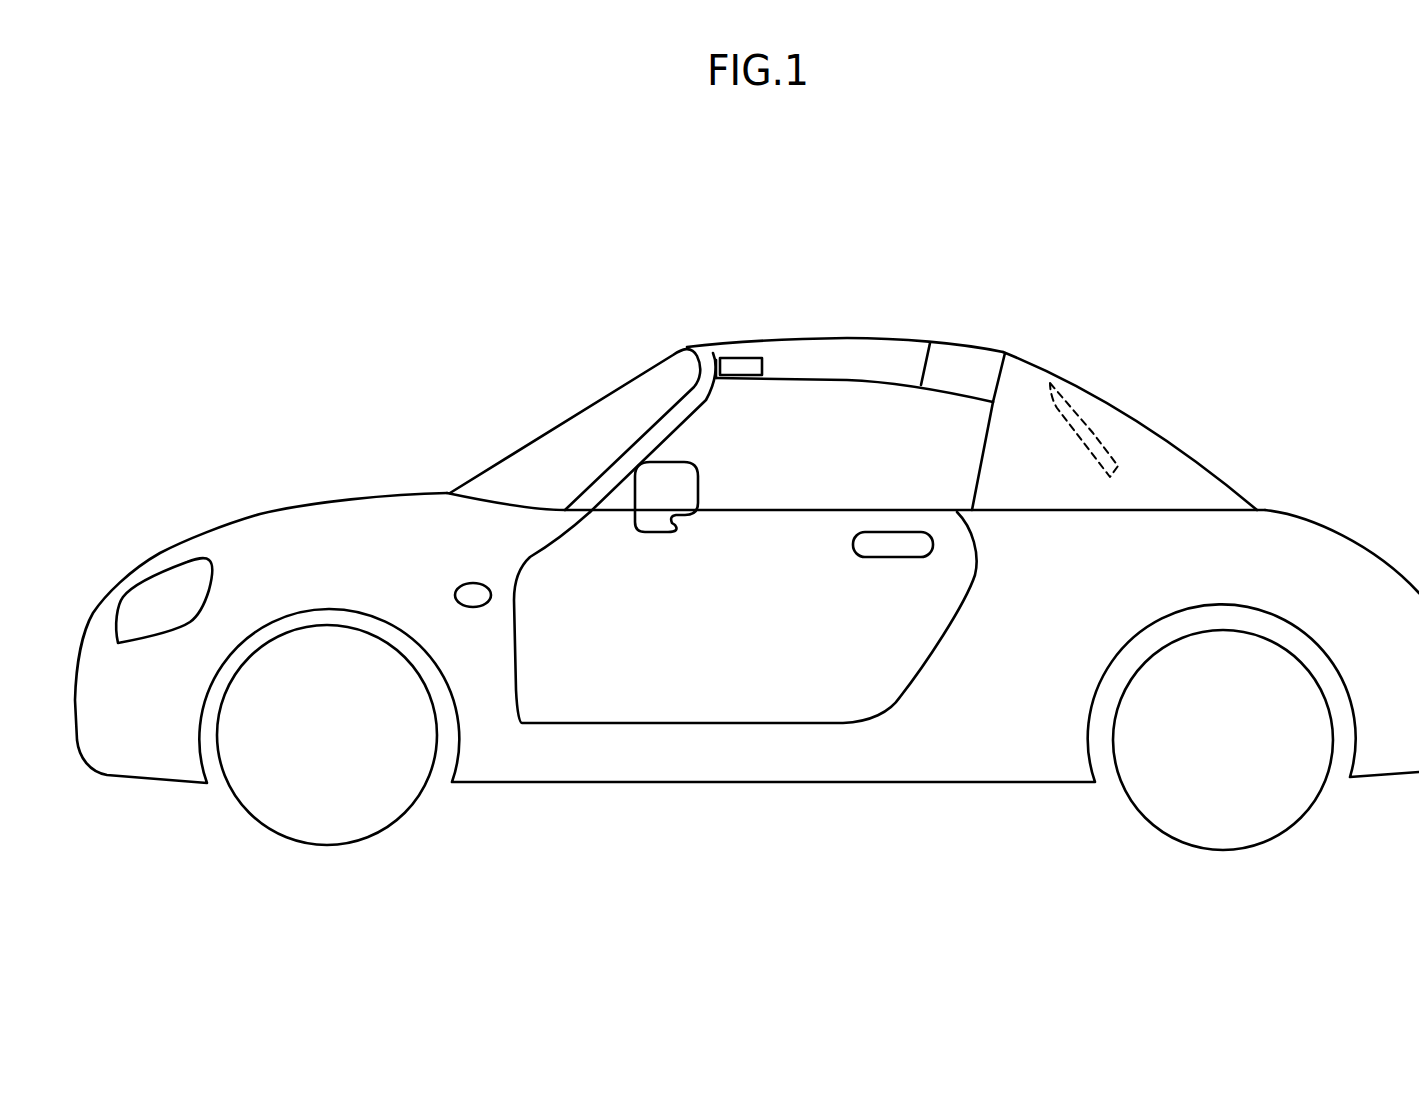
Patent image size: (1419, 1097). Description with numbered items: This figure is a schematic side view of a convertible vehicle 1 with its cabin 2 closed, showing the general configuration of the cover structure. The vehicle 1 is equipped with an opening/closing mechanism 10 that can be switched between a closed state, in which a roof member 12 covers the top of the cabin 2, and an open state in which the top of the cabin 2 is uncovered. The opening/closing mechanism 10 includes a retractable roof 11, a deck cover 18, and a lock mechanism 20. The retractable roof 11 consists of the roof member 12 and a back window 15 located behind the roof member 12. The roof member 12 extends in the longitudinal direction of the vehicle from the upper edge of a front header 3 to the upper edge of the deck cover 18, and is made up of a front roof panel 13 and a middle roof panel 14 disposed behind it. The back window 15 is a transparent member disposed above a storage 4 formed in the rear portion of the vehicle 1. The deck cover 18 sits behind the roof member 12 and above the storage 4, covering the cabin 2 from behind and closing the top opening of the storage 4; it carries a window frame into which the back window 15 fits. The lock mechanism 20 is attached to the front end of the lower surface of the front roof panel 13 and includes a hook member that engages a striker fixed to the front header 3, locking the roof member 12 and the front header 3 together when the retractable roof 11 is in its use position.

The vehicle 1 is at (413, 303).
The cabin 2 is at (732, 636).
The front header 3 is at (680, 352).
The storage 4 is at (1057, 639).
The opening/closing mechanism 10 is at (1220, 330).
The retractable roof 11 is at (945, 264).
The roof member 12 is at (822, 332).
The front roof panel 13 is at (883, 338).
The middle roof panel 14 is at (965, 343).
The back window 15 is at (1095, 433).
The deck cover 18 is at (1199, 462).
The lock mechanism 20 is at (741, 357).